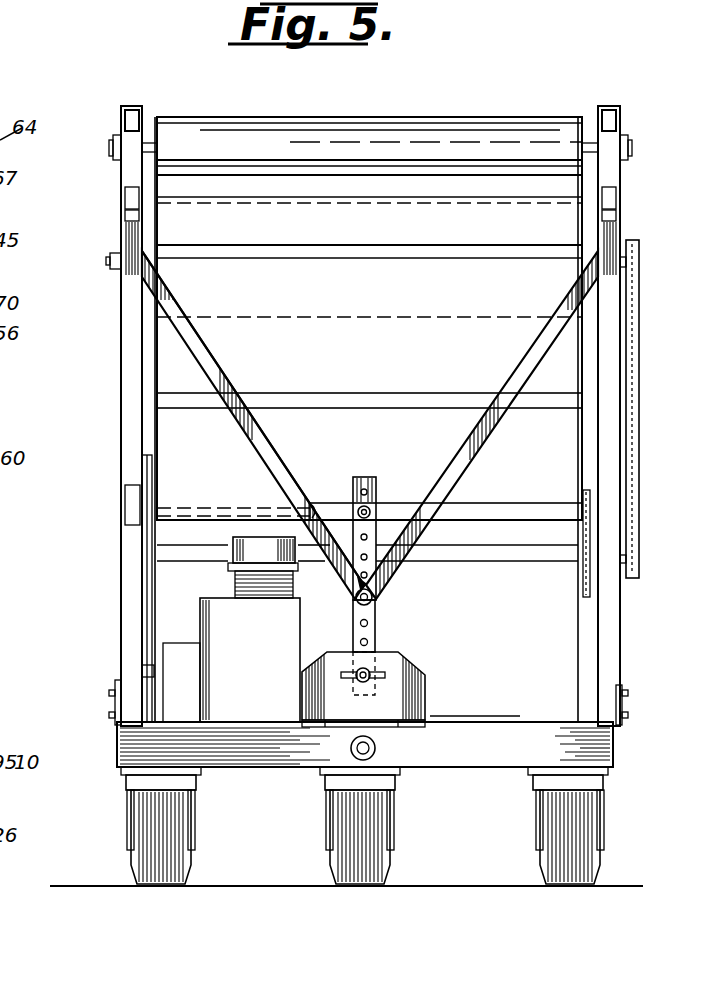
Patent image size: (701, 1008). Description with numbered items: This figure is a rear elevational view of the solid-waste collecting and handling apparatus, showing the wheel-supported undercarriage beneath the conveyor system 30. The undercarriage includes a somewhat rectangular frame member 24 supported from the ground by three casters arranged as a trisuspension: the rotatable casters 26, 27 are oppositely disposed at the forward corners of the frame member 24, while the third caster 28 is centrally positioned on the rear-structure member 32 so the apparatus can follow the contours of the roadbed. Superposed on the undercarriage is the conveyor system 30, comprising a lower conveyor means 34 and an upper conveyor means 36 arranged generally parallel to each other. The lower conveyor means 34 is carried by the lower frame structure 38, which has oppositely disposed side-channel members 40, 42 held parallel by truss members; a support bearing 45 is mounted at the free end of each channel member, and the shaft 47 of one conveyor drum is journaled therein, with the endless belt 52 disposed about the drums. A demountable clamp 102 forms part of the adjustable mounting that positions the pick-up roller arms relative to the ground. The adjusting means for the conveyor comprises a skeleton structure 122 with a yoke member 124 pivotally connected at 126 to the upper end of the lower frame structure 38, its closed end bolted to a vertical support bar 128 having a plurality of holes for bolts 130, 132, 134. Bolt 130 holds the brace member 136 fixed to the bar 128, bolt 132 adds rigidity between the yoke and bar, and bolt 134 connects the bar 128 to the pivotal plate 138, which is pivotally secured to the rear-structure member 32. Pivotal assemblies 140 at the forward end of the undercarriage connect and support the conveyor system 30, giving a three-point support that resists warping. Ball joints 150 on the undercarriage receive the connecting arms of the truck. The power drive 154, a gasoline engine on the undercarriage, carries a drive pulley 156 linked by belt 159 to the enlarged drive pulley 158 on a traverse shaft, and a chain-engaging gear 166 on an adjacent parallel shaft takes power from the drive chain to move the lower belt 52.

The frame member 24 is at (493, 745).
The caster 26 is at (160, 838).
The caster 27 is at (568, 835).
The caster 28 is at (358, 825).
The conveyor system 30 is at (213, 136).
The rear-structure member 32 is at (462, 752).
The lower conveyor means 34 is at (392, 308).
The upper conveyor means 36 is at (416, 135).
The lower frame structure 38 is at (112, 410).
The side-channel member 40 is at (128, 363).
The side-channel member 42 is at (621, 470).
The support bearing 45 is at (108, 261).
The shaft 47 is at (588, 250).
The endless belt 52 is at (432, 394).
The demountable clamp 102 is at (0, 726).
The skeleton structure 122 is at (222, 421).
The yoke member 124 is at (248, 450).
The pivotal connection 126 is at (122, 215).
The vertical support bar 128 is at (366, 478).
The bolt 130 is at (380, 503).
The bolt 132 is at (378, 596).
The bolt 134 is at (378, 680).
The brace member 136 is at (330, 500).
The pivotal plate 138 is at (320, 683).
The pivotal assemblies 140 is at (100, 706).
The ball joint 150 is at (352, 753).
The power drive 154 is at (290, 633).
The drive pulley 156 is at (143, 670).
The enlarged drive pulley 158 is at (150, 548).
The belt 159 is at (145, 603).
The chain-engaging gear 166 is at (590, 587).